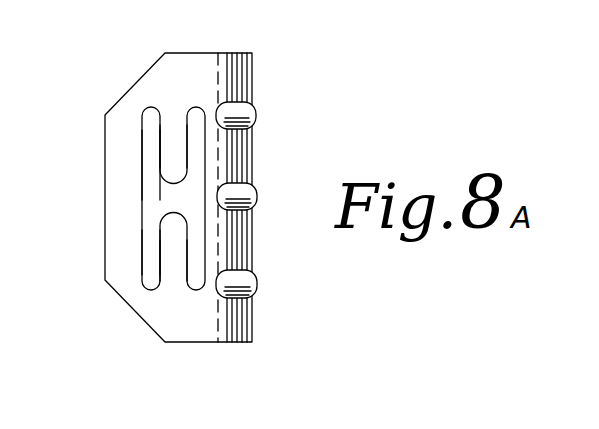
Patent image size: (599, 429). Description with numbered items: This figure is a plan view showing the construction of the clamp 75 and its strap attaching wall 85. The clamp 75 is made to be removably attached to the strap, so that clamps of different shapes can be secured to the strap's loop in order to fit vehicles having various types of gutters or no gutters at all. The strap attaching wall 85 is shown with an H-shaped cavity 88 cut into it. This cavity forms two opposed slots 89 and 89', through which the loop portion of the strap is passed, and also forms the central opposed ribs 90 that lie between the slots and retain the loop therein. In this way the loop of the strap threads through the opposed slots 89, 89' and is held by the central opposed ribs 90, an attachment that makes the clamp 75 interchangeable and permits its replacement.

The clamp 75 is at (268, 134).
The strap attaching wall 85 is at (132, 97).
The H-shaped cavity 88 is at (151, 190).
The slot 89 is at (96, 259).
The slot 89' is at (169, 318).
The central opposed ribs 90 is at (175, 227).